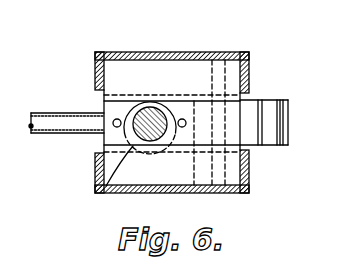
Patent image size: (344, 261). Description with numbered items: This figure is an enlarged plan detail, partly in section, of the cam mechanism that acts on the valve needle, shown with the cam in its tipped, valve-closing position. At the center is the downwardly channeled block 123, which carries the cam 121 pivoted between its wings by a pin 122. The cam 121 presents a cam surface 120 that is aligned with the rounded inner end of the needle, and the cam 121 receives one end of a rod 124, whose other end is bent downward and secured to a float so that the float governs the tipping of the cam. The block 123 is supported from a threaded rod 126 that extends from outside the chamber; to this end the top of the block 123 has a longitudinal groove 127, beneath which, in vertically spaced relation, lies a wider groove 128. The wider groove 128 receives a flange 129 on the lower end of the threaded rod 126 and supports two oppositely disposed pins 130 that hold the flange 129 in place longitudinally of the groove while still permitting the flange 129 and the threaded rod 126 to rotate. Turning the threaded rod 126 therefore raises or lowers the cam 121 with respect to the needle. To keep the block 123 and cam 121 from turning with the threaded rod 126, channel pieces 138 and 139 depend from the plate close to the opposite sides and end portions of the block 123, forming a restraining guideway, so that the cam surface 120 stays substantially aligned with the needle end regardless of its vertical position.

The cam surface 120 is at (288, 118).
The cam 121 is at (246, 148).
The pin 122 is at (234, 51).
The channeled block 123 is at (195, 70).
The rod 124 is at (56, 134).
The threaded rod 126 is at (154, 112).
The longitudinal groove 127 is at (119, 104).
The wider groove 128 is at (128, 97).
The flange 129 is at (97, 192).
The pins 130 is at (115, 127).
The channel piece 138 is at (229, 192).
The channel piece 139 is at (114, 52).